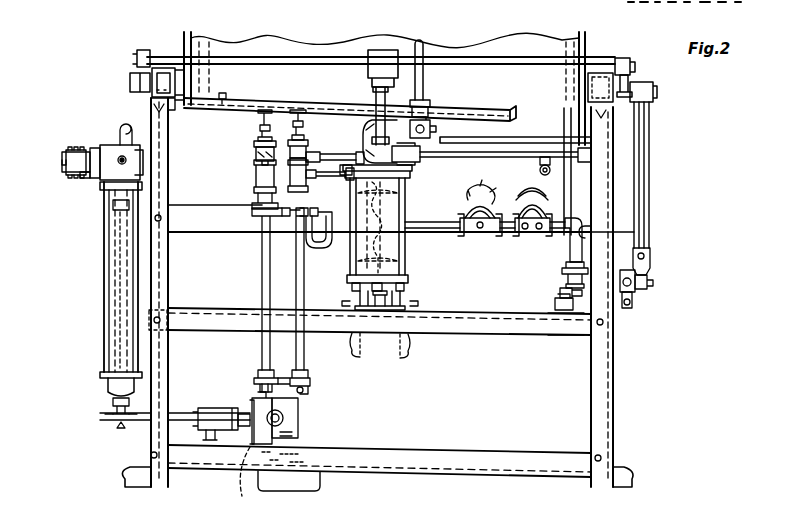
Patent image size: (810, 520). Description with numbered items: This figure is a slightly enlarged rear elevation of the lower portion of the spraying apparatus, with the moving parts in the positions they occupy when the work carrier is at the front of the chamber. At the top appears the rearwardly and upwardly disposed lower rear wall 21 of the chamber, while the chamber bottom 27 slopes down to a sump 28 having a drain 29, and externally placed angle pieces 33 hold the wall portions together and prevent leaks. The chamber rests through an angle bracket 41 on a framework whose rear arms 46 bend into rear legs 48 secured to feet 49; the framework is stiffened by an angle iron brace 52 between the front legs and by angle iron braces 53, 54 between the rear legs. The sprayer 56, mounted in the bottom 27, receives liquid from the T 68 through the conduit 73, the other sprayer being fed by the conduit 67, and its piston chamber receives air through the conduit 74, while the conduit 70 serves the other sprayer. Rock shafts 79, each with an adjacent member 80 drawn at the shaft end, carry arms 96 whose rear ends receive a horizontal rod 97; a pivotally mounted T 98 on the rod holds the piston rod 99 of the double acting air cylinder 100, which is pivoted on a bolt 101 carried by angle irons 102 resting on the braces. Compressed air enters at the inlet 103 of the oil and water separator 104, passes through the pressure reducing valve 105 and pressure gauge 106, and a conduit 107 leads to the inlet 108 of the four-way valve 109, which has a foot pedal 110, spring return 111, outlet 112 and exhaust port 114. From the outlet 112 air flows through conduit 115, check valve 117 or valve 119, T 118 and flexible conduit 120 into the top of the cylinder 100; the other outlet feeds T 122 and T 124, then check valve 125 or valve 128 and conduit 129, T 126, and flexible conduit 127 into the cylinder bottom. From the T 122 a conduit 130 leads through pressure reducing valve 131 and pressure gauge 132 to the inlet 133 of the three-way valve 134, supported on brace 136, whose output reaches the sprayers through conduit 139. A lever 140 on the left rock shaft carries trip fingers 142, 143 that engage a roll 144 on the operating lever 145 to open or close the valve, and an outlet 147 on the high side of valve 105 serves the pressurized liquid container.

The lower rear wall 21 is at (275, 40).
The bottom 27 is at (245, 107).
The sump 28 is at (511, 118).
The drain 29 is at (539, 168).
The angle pieces 33 is at (226, 95).
The angle bracket 41 is at (176, 104).
The rear arms 46 is at (168, 200).
The rear legs 48 is at (600, 400).
The feet 49 is at (125, 478).
The angle iron brace 52 is at (205, 234).
The angle iron brace 53 is at (420, 450).
The angle iron brace 54 is at (474, 336).
The sprayer 56 is at (368, 130).
The conduit 67 is at (424, 57).
The T 68 is at (430, 124).
The conduit 70 is at (564, 115).
The conduit 73 is at (420, 150).
The conduit 74 is at (472, 158).
The rock shafts 79 is at (130, 83).
The bracket 80 is at (162, 68).
The arms 96 is at (137, 60).
The horizontal rod 97 is at (318, 57).
The T 98 is at (385, 50).
The piston rod 99 is at (375, 96).
The double acting air cylinder 100 is at (382, 238).
The bolt 101 is at (403, 300).
The angle irons 102 is at (400, 344).
The inlet 103 is at (125, 128).
The oil and water separator 104 is at (110, 318).
The pressure reducing valve 105 is at (75, 158).
The pressure gauge 106 is at (88, 178).
The conduit 107 is at (116, 278).
The inlet 108 is at (280, 410).
The four-way valve 109 is at (298, 418).
The foot pedal 110 is at (218, 408).
The spring return 111 is at (243, 412).
The outlet 112 is at (260, 380).
The exhaust port 114 is at (258, 476).
The conduit 115 is at (262, 283).
The check valve 117 is at (256, 182).
The T 118 is at (256, 198).
The valve 119 is at (258, 148).
The flexible conduit 120 is at (335, 245).
The T 122 is at (308, 376).
The T 124 is at (312, 198).
The check valve 125 is at (334, 156).
The T 126 is at (402, 195).
The flexible conduit 127 is at (400, 265).
The valve 128 is at (300, 152).
The conduit 129 is at (350, 172).
The conduit 130 is at (262, 283).
The pressure reducing valve 131 is at (480, 236).
The pressure gauge 132 is at (532, 236).
The inlet 133 is at (566, 242).
The three-way valve 134 is at (566, 312).
The brace 136 is at (540, 337).
The conduit 139 is at (590, 226).
The lever 140 is at (649, 145).
The trip finger 142 is at (635, 290).
The trip finger 143 is at (651, 258).
The roll 144 is at (653, 284).
The operating lever 145 is at (632, 300).
The outlet 147 is at (105, 140).